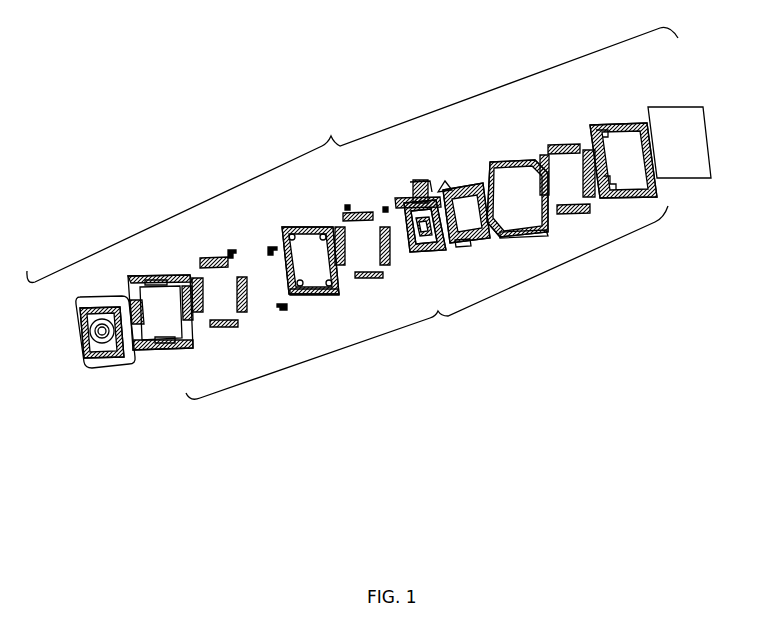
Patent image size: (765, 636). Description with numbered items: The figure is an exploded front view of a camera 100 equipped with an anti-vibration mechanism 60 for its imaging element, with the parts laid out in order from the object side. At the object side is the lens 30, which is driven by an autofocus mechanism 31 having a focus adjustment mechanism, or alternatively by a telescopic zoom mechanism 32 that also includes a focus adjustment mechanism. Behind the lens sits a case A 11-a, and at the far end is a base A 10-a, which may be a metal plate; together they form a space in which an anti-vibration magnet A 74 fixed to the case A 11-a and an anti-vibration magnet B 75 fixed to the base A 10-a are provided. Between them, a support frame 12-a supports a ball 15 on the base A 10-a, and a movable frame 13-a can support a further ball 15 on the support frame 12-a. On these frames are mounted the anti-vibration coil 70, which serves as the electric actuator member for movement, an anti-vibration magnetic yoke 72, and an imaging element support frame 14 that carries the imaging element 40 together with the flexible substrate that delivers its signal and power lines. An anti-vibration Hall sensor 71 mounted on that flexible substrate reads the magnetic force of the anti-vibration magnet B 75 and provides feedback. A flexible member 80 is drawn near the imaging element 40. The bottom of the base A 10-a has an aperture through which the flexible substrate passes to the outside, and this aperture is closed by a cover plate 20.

The camera 100 is at (352, 154).
The anti-vibration mechanism 60 is at (427, 302).
The lens 30 is at (87, 314).
The autofocus mechanism 31 is at (99, 302).
The telescopic zoom mechanism 32 is at (101, 318).
The case A 11-a is at (137, 276).
The anti-vibration magnet A 74 is at (224, 320).
The anti-vibration magnetic yoke 72 is at (278, 305).
The ball 15 is at (432, 229).
The movable frame 13-a is at (313, 297).
The anti-vibration coil 70 is at (368, 272).
The anti-vibration Hall sensor 71 is at (384, 208).
The flexible cable 80 is at (412, 186).
The imaging element 40 is at (428, 252).
The imaging element support frame 14 is at (463, 190).
The support frame 12-a is at (536, 238).
The anti-vibration magnet B 75 is at (572, 205).
The base A 10-a is at (637, 123).
The cover plate 20 is at (684, 113).